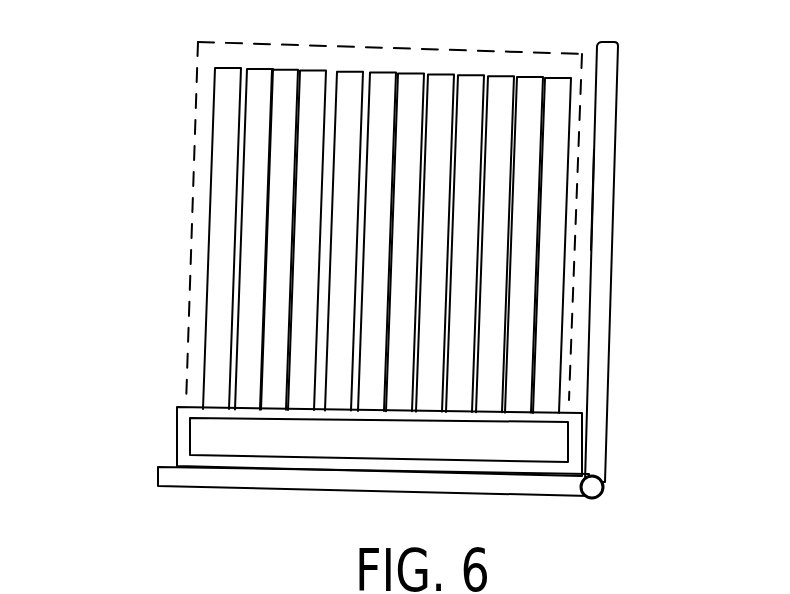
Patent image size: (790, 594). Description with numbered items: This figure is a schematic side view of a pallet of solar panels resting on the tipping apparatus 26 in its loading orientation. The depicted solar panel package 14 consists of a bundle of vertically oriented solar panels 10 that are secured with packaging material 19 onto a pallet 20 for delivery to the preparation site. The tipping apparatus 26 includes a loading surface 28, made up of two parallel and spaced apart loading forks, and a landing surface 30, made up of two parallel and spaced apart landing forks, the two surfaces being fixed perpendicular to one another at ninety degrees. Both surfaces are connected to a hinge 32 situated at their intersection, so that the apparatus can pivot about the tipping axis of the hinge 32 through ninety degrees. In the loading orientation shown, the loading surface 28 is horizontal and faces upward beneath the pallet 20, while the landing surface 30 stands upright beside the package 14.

The solar panel package 14 is at (334, 206).
The packaging material 19 is at (198, 105).
The solar panels 10 is at (253, 252).
The pallet 20 is at (183, 422).
The loading surface 28 is at (242, 472).
The tipping apparatus 26 is at (625, 32).
The landing surface 30 is at (592, 205).
The hinge 32 is at (603, 483).